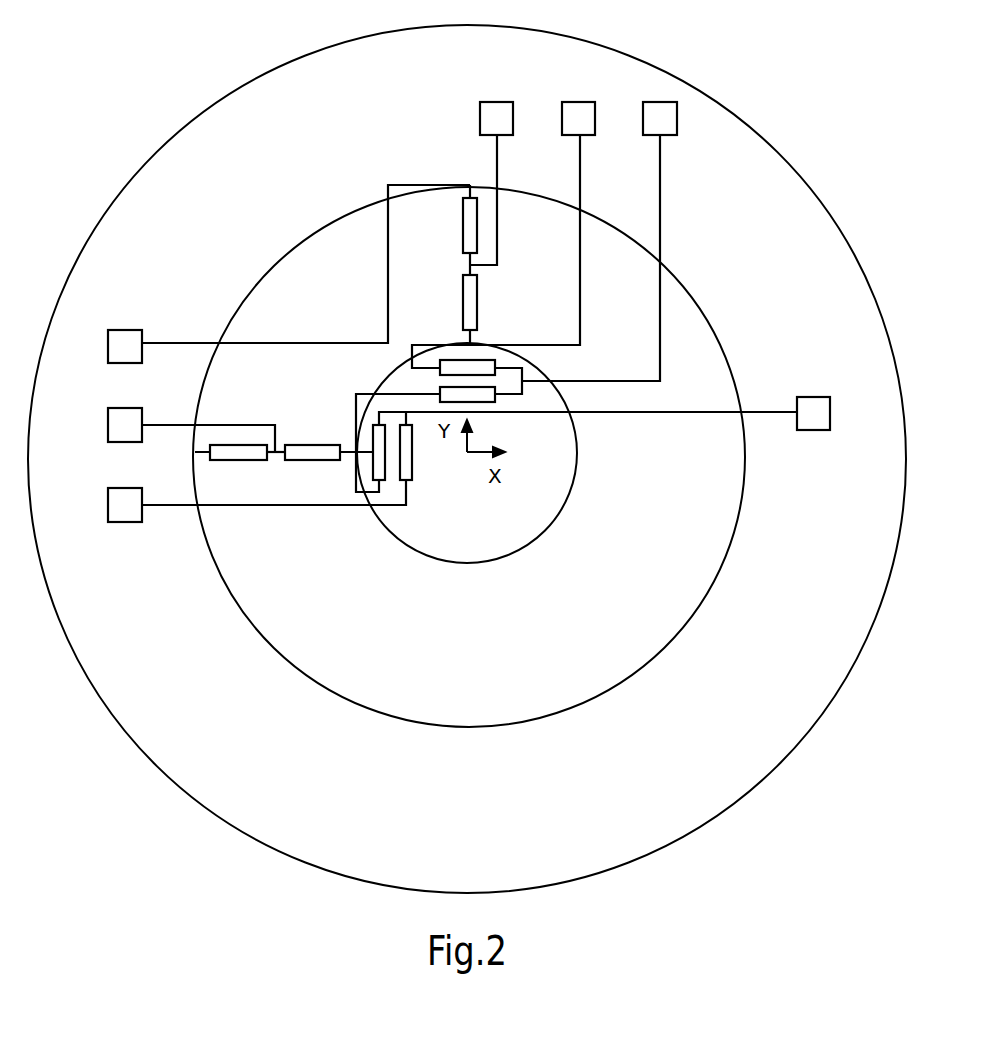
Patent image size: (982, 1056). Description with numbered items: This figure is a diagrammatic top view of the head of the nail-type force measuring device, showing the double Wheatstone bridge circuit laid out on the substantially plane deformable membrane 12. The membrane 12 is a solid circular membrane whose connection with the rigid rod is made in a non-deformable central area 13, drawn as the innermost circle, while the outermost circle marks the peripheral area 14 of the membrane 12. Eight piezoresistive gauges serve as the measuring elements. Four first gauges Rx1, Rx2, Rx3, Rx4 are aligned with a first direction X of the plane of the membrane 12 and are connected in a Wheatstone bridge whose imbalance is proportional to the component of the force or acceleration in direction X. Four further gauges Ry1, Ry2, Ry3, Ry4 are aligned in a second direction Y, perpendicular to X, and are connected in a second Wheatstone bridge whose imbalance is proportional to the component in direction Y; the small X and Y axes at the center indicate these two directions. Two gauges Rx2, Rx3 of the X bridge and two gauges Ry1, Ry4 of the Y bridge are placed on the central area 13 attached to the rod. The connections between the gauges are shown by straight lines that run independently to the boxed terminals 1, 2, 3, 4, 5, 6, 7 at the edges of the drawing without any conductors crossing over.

The terminal electrode 1 is at (257, 501).
The terminal electrode 2 is at (604, 413).
The terminal electrode 3 is at (289, 274).
The terminal electrode 4 is at (191, 430).
The terminal electrode 5 is at (503, 235).
The terminal electrode 6 is at (491, 188).
The terminal electrode 7 is at (586, 248).
The deformable membrane 12 is at (690, 544).
The central area 13 is at (418, 533).
The peripheral area 14 is at (787, 206).
The piezoresistive gauge Rx1 is at (237, 453).
The piezoresistive gauge Rx2 is at (406, 456).
The piezoresistive gauge Rx3 is at (378, 473).
The piezoresistive gauge Rx4 is at (322, 453).
The piezoresistive gauge Ry1 is at (480, 365).
The piezoresistive gauge Ry2 is at (468, 300).
The piezoresistive gauge Ry3 is at (468, 225).
The piezoresistive gauge Ry4 is at (470, 402).